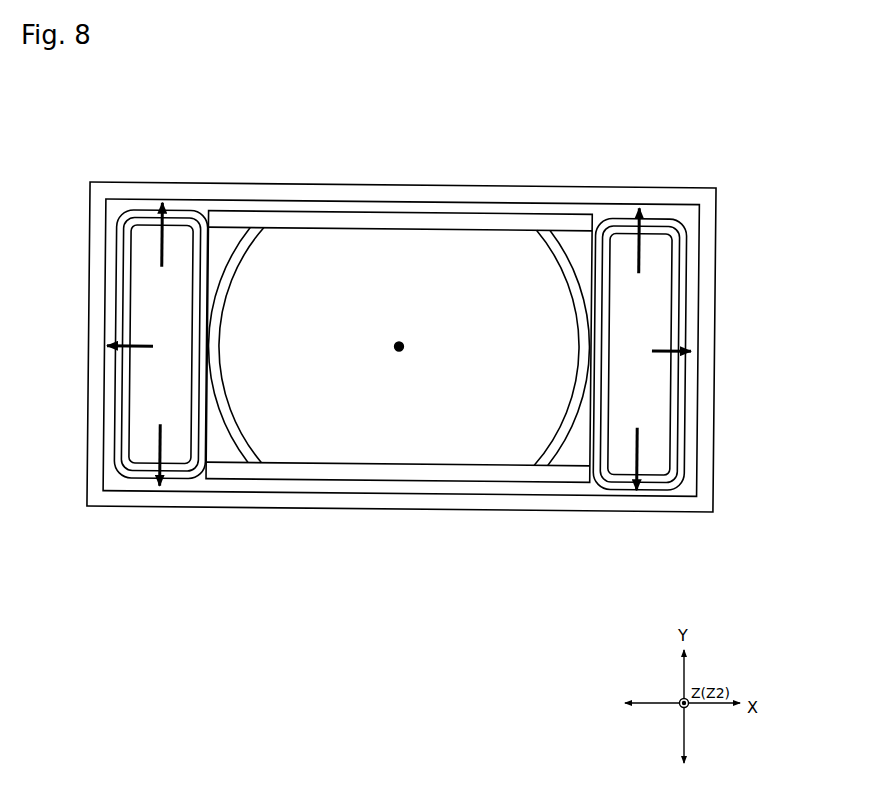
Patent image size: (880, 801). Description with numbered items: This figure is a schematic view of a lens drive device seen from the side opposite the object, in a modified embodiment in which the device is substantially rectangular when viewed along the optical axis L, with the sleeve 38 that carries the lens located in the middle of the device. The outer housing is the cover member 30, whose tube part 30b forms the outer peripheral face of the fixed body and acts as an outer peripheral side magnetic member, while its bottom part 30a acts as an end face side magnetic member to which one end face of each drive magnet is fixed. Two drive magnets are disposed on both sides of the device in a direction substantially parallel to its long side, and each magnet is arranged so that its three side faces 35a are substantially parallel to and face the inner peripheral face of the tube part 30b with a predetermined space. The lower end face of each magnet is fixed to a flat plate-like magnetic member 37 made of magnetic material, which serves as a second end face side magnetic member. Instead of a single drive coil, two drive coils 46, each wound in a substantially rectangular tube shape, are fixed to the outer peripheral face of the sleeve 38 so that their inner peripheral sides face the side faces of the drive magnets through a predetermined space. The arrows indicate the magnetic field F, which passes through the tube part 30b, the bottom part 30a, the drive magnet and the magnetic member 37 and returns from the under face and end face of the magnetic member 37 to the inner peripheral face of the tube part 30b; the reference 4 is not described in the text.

The lens unit 4 is at (400, 347).
The cover member 30 is at (401, 330).
The tube part 30b is at (373, 184).
The bottom part 30a is at (458, 208).
The side faces 35a is at (148, 228).
The magnetic member 37 is at (171, 322).
The sleeve 38 is at (552, 214).
The drive coils 46 is at (113, 409).
The magnetic field F is at (165, 221).
The optical axis L is at (398, 342).